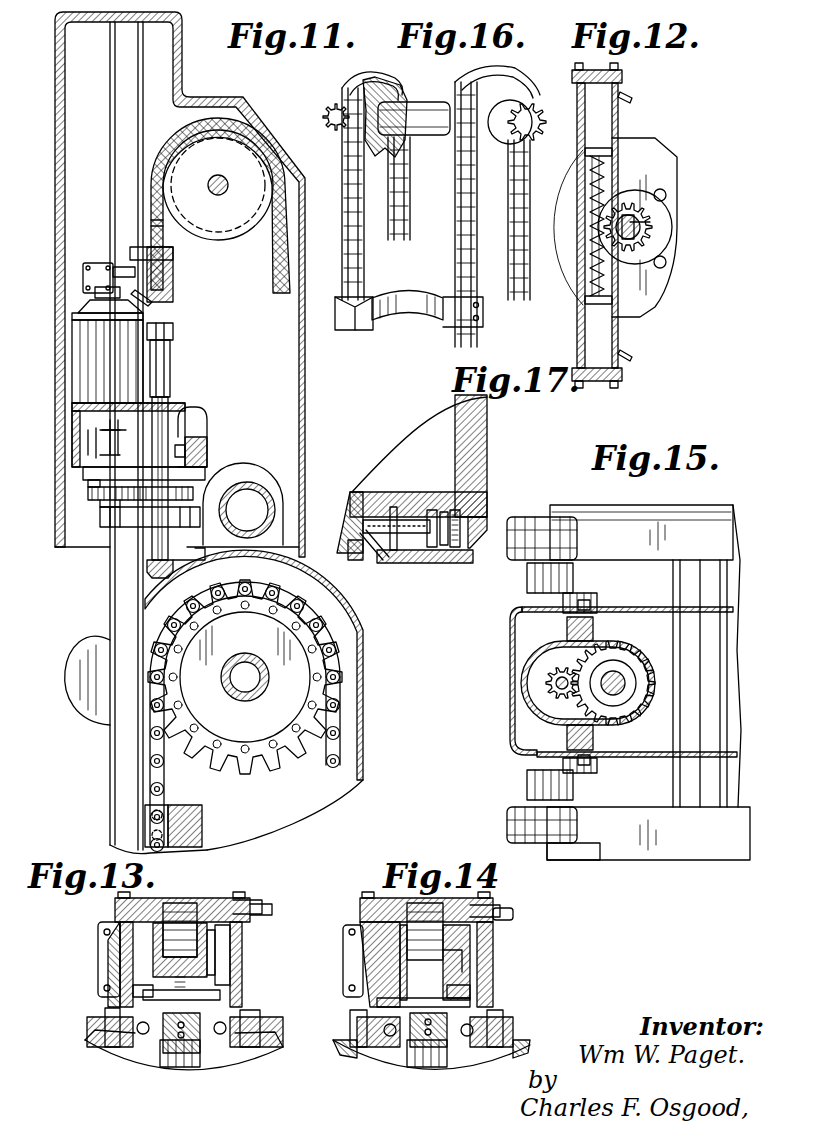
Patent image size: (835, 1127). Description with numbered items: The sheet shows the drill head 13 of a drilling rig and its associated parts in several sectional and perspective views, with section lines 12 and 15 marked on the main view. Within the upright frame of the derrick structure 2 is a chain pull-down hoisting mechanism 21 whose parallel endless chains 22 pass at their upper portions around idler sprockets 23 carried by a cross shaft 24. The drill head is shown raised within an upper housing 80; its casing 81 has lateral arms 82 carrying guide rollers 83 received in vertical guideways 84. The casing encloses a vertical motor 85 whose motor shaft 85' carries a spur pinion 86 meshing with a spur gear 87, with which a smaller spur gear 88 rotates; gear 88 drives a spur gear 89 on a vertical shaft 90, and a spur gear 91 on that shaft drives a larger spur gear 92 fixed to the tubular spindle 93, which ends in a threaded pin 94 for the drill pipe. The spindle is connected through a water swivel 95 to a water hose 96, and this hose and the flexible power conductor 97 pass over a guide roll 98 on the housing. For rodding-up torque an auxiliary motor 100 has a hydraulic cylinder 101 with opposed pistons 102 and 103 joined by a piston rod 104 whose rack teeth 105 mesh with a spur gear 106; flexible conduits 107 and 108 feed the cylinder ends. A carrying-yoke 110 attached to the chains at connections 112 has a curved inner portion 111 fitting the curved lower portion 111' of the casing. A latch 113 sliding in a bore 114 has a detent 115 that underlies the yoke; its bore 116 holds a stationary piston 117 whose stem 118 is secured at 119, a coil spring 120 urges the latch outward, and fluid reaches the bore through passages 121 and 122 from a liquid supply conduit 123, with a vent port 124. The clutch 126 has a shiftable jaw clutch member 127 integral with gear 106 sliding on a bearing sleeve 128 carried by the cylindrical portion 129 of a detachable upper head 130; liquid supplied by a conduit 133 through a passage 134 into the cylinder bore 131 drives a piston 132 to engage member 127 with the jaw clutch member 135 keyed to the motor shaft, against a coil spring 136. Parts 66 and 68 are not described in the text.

In FIG. 15, the derrick structure 2 is at (652, 868).
In FIG. 11, the sand reel 12 is at (137, 257).
In FIG. 11, the drill head 13 is at (65, 346).
In FIG. 12, the drill head 13 is at (697, 235).
In FIG. 15, the drill head 13 is at (518, 668).
In FIG. 11, the section line 15— 15 is at (33, 430).
In FIG. 11, the hoisting mechanism 21 is at (338, 722).
In FIG. 16, the hoisting mechanism 21 is at (408, 185).
In FIG. 11, the endless chains 22 is at (340, 760).
In FIG. 16, the endless chains 22 is at (360, 85).
In FIG. 11, the idler sprockets 23 is at (290, 652).
In FIG. 16, the idler sprockets 23 is at (385, 98).
In FIG. 11, the cross shaft 24 is at (247, 660).
In FIG. 16, the cross shaft 24 is at (415, 103).
In FIG. 11, the boss 66 is at (273, 522).
In FIG. 15, the boss 66 is at (722, 785).
In FIG. 11, the bracket 68 is at (100, 720).
In FIG. 15, the bracket 68 is at (527, 567).
In FIG. 11, the upper housing 80 is at (55, 62).
In FIG. 11, the casing 81 is at (72, 352).
In FIG. 12, the casing 81 is at (660, 283).
In FIG. 17, the casing 81 is at (463, 422).
In FIG. 15, the casing 81 is at (613, 652).
In FIG. 13, the casing 81 is at (90, 1047).
In FIG. 14, the casing 81 is at (516, 1052).
In FIG. 15, the lateral arms 82 is at (597, 625).
In FIG. 15, the guide rollers 83 is at (590, 605).
In FIG. 11, the vertical guideways 84 is at (113, 147).
In FIG. 15, the vertical guideways 84 is at (563, 600).
In FIG. 11, the vertical motor 85 is at (174, 360).
In FIG. 11, the vertical motor shaft 85' is at (109, 412).
In FIG. 15, the vertical motor shaft 85' is at (546, 716).
In FIG. 13, the vertical motor shaft 85' is at (180, 1073).
In FIG. 14, the vertical motor shaft 85' is at (426, 1073).
In FIG. 11, the spur pinion 86 is at (93, 440).
In FIG. 15, the spur pinion 86 is at (557, 685).
In FIG. 11, the spur gear 87 is at (190, 428).
In FIG. 15, the spur gear 87 is at (625, 715).
In FIG. 11, the smaller spur gear 88 is at (185, 452).
In FIG. 11, the spur gear 89 is at (95, 472).
In FIG. 11, the vertical shaft 90 is at (105, 482).
In FIG. 11, the spur gear 91 is at (103, 500).
In FIG. 11, the larger spur gear 92 is at (205, 486).
In FIG. 11, the drive shaft or spindle 93 is at (168, 548).
In FIG. 15, the drive shaft or spindle 93 is at (620, 680).
In FIG. 11, the threaded pin 94 is at (150, 574).
In FIG. 11, the water swivel 95 is at (170, 288).
In FIG. 11, the water hose 96 is at (166, 236).
In FIG. 11, the flexible power conductor 97 is at (156, 222).
In FIG. 11, the guide roll or pulley 98 is at (238, 140).
In FIG. 11, the auxiliary motor 100 is at (83, 283).
In FIG. 12, the auxiliary motor 100 is at (618, 322).
In FIG. 13, the auxiliary motor 100 is at (98, 960).
In FIG. 14, the auxiliary motor 100 is at (343, 957).
In FIG. 12, the hydraulic cylinder 101 is at (618, 342).
In FIG. 12, the piston 102 is at (612, 300).
In FIG. 12, the piston 103 is at (608, 152).
In FIG. 12, the piston rod 104 is at (600, 270).
In FIG. 13, the piston rod 104 is at (127, 975).
In FIG. 14, the piston rod 104 is at (367, 970).
In FIG. 12, the rack teeth 105 is at (603, 193).
In FIG. 13, the rack teeth 105 is at (117, 962).
In FIG. 14, the rack teeth 105 is at (343, 930).
In FIG. 12, the spur gear 106 is at (660, 207).
In FIG. 13, the spur gear 106 is at (220, 962).
In FIG. 14, the spur gear 106 is at (467, 965).
In FIG. 11, the flexible conduit 107 is at (148, 304).
In FIG. 12, the flexible conduit 107 is at (632, 358).
In FIG. 12, the flexible conduit 108 is at (632, 100).
In FIG. 11, the carrying-yoke 110 is at (175, 808).
In FIG. 16, the carrying-yoke 110 is at (395, 312).
In FIG. 17, the carrying-yoke 110 is at (487, 427).
In FIG. 11, the curved inner portion 111 is at (254, 700).
In FIG. 16, the curved inner portion 111 is at (422, 277).
In FIG. 11, the curved lower portion 111' is at (252, 504).
In FIG. 17, the curved lower portion 111' is at (508, 466).
In FIG. 15, the curved lower portion 111' is at (692, 692).
In FIG. 11, the connections 112 is at (110, 815).
In FIG. 16, the connections 112 is at (352, 298).
In FIG. 17, the latch 113 is at (433, 560).
In FIG. 17, the bore 114 is at (423, 507).
In FIG. 11, the detent 115 is at (205, 542).
In FIG. 17, the detent 115 is at (487, 527).
In FIG. 17, the latch bore 116 is at (448, 507).
In FIG. 17, the stationary piston 117 is at (441, 507).
In FIG. 17, the stem 118 is at (377, 525).
In FIG. 17, the securing point 119 is at (372, 545).
In FIG. 17, the coil spring 120 is at (453, 560).
In FIG. 17, the fluid passage 121 is at (400, 507).
In FIG. 17, the passage 122 is at (360, 507).
In FIG. 17, the liquid supply conduit 123 is at (348, 550).
In FIG. 17, the vent port 124 is at (397, 549).
In FIG. 13, the clutch 126 is at (143, 995).
In FIG. 14, the clutch 126 is at (480, 1007).
In FIG. 13, the shiftable jaw clutch member 127 is at (213, 993).
In FIG. 14, the shiftable jaw clutch member 127 is at (377, 1003).
In FIG. 13, the bearing sleeve 128 is at (153, 937).
In FIG. 14, the bearing sleeve 128 is at (393, 960).
In FIG. 12, the cylindrical portion 129 is at (654, 227).
In FIG. 13, the cylindrical portion 129 is at (220, 945).
In FIG. 14, the cylindrical portion 129 is at (460, 947).
In FIG. 13, the upper head 130 is at (152, 900).
In FIG. 14, the upper head 130 is at (413, 900).
In FIG. 13, the cylinder bore 131 is at (193, 905).
In FIG. 14, the cylinder bore 131 is at (443, 923).
In FIG. 12, the piston 132 is at (640, 220).
In FIG. 13, the piston 132 is at (187, 920).
In FIG. 14, the piston 132 is at (487, 915).
In FIG. 11, the conduit 133 is at (132, 262).
In FIG. 13, the conduit 133 is at (262, 909).
In FIG. 14, the conduit 133 is at (513, 915).
In FIG. 13, the passage 134 is at (233, 907).
In FIG. 14, the passage 134 is at (477, 913).
In FIG. 13, the jaw clutch member 135 is at (228, 1013).
In FIG. 14, the jaw clutch member 135 is at (487, 1017).
In FIG. 13, the coil spring 136 is at (153, 1033).
In FIG. 14, the coil spring 136 is at (397, 1033).